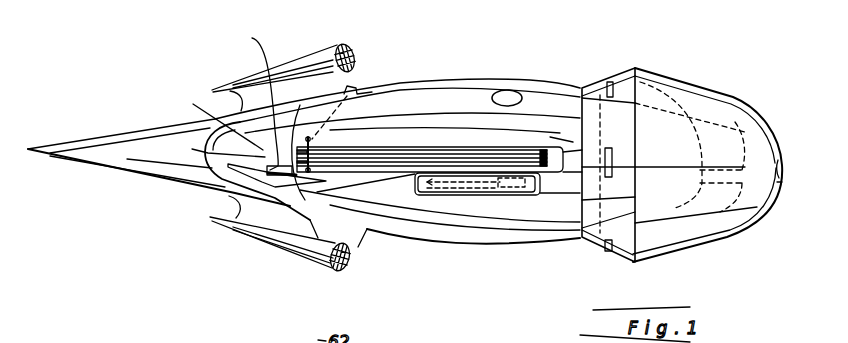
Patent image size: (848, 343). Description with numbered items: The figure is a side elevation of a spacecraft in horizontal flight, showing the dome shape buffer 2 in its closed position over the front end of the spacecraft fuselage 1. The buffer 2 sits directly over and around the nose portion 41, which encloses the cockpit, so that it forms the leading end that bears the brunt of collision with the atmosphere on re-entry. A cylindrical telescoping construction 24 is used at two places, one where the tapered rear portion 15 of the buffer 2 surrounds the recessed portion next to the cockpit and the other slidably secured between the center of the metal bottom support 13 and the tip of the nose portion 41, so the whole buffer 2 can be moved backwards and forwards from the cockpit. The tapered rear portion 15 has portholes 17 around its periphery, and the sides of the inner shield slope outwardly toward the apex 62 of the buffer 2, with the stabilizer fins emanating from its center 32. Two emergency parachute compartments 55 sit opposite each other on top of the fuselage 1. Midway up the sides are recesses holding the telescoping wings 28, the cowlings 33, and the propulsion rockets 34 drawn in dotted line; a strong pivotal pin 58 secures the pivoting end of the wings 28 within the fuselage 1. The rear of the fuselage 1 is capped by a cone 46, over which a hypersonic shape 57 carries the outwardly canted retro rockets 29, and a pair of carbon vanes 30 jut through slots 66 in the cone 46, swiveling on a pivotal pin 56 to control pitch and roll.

The spacecraft fuselage 1 is at (478, 64).
The dome shape buffer 2 is at (716, 80).
The metal bottom support 13 is at (740, 198).
The tapered rear portion 15 is at (612, 256).
The portholes 17 is at (613, 154).
The cylindrical telescoping construction 24 is at (730, 138).
The telescoping wings 28 is at (475, 163).
The retro rockets 29 is at (303, 60).
The carbon vanes 30 is at (214, 147).
The center of the buffer 32 is at (782, 163).
The cowlings 33 is at (477, 197).
The propulsion rockets 34 is at (498, 188).
The nose portion 41 is at (780, 188).
The cone 46 is at (214, 120).
The emergency parachute compartments 55 is at (512, 97).
The pivotal pin 56 is at (263, 178).
The hypersonic shape 57 is at (127, 159).
The pivotal pin 58 is at (357, 87).
The apex of the buffer 62 is at (636, 67).
The slots 66 is at (252, 38).